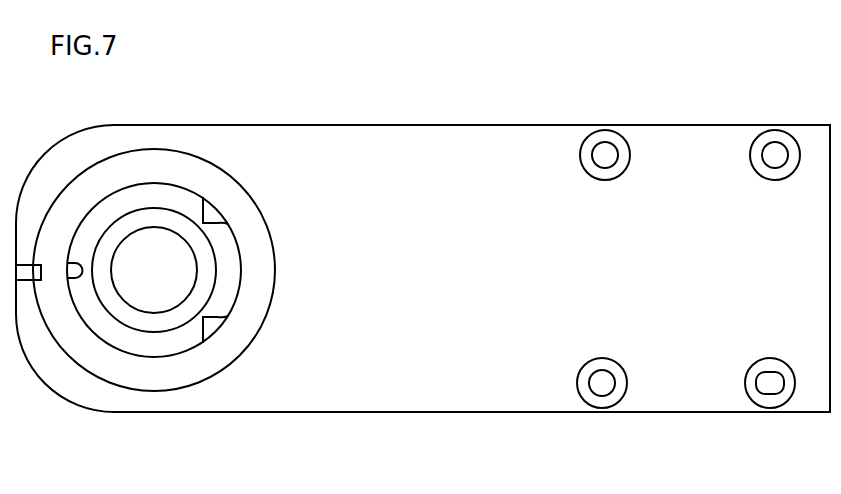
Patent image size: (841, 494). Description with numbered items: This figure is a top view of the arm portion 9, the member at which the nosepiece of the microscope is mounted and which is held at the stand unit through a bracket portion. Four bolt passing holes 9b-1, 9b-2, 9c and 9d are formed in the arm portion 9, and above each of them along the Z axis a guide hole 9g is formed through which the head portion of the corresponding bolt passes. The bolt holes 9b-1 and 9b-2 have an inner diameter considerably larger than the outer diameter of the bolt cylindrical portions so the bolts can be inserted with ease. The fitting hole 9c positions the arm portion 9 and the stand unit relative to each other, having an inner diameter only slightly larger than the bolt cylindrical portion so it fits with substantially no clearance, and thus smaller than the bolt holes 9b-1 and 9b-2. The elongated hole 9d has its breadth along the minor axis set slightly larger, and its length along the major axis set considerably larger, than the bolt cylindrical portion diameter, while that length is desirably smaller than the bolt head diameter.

The arm portion 9 is at (302, 122).
The bolt hole 9b-1 is at (762, 142).
The bolt hole 9b-2 is at (595, 143).
The guide hole 9g is at (602, 181).
The fitting hole 9c is at (598, 398).
The elongated hole 9d is at (763, 400).